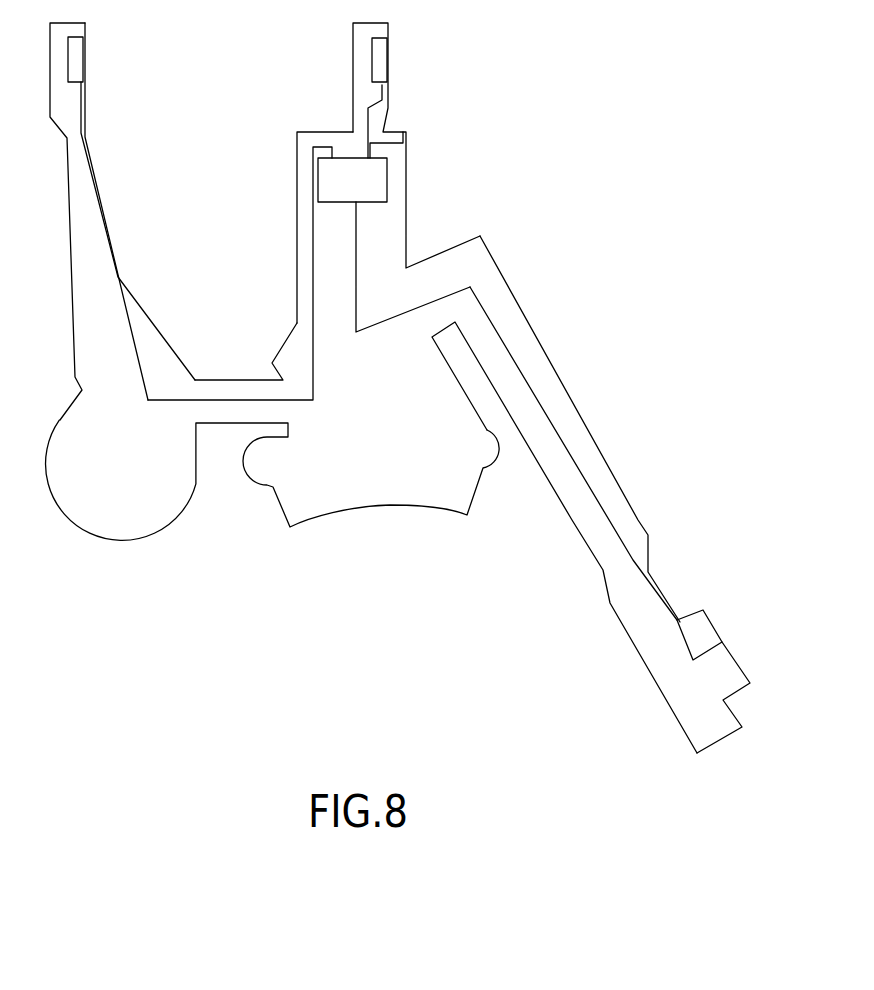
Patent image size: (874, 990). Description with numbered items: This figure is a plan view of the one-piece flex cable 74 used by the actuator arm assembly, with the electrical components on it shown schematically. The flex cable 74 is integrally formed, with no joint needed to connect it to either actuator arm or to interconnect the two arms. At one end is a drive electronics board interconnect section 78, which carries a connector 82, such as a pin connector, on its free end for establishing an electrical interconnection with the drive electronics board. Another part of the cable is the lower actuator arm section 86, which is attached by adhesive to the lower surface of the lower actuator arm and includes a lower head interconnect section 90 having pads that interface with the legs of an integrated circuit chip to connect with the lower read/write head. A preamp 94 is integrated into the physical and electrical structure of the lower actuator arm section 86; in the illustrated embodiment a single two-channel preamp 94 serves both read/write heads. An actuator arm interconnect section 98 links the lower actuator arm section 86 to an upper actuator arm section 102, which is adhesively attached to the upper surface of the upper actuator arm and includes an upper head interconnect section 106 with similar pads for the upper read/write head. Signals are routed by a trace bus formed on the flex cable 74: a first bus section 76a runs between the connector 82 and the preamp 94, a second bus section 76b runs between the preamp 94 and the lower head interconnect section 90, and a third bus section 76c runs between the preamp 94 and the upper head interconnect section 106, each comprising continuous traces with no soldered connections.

The flex cable 74 is at (290, 527).
The first bus section 76a is at (583, 473).
The second bus section 76b is at (390, 143).
The third bus section 76c is at (313, 373).
The drive electronics board interconnect section 78 is at (570, 395).
The connector 82 is at (735, 658).
The lower actuator arm section 86 is at (406, 192).
The lower head interconnect section 90 is at (388, 62).
The preamp 94 is at (363, 194).
The actuator arm interconnect section 98 is at (218, 380).
The upper actuator arm section 102 is at (107, 225).
The upper head interconnect section 106 is at (85, 55).